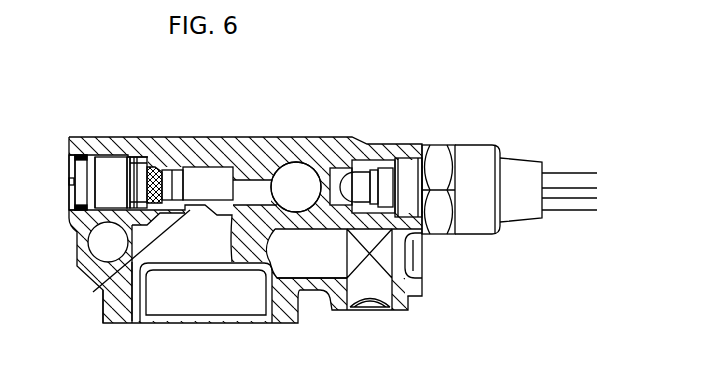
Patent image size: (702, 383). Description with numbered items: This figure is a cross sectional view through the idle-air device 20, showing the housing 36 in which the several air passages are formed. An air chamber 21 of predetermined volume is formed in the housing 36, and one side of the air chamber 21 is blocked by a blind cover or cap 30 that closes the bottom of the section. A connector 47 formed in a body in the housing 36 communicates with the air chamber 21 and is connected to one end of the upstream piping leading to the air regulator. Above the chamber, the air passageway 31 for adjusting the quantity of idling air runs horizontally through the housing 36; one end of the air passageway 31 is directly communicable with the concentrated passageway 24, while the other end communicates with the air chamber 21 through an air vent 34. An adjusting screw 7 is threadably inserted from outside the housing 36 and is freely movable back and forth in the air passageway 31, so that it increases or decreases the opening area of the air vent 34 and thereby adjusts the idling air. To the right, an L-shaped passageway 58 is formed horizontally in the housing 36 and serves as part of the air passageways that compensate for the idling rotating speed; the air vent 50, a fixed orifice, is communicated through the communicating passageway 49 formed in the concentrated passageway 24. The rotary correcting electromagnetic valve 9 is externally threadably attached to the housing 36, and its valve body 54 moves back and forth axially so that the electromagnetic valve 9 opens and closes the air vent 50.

The valve unit 20 is at (337, 132).
The adjusting screw 7 is at (107, 160).
The air passageway 31 is at (198, 172).
The concentrated passageway 24 is at (293, 172).
The communicating passageway 49 is at (293, 172).
The air vent 50 is at (344, 168).
The valve body 54 is at (358, 181).
The rotary correcting electromagnetic valve 9 is at (477, 226).
The connector 47 is at (100, 240).
The air vent 34 is at (126, 261).
The air chamber 21 is at (214, 250).
The housing 36 is at (118, 312).
The blind cover or cap 30 is at (214, 296).
The L-shaped passageway 58 is at (307, 262).